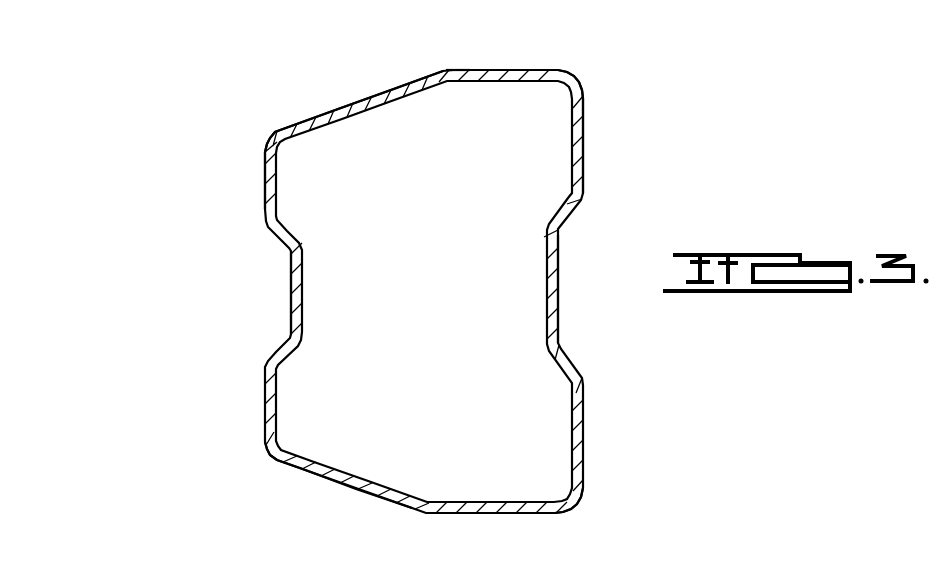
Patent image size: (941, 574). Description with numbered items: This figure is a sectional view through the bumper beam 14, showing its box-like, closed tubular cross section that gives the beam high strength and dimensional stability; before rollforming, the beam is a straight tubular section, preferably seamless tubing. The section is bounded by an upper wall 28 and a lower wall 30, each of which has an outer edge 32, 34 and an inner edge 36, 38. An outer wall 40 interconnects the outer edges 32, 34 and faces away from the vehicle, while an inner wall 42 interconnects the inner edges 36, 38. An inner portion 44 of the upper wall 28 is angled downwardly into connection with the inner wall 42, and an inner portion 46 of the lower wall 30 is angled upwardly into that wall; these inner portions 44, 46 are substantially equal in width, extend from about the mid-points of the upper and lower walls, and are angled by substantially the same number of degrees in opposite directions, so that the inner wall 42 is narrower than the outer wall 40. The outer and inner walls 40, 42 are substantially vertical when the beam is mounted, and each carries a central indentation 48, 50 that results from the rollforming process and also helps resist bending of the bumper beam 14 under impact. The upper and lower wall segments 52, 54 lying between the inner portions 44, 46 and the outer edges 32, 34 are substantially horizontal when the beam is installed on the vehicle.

The bumper beam 14 is at (516, 54).
The upper wall 28 is at (557, 63).
The lower wall 30 is at (509, 522).
The outer edge of upper wall 32 is at (572, 82).
The outer edge of lower wall 34 is at (562, 511).
The inner edge of upper wall 36 is at (279, 128).
The inner edge of lower wall 38 is at (270, 455).
The outer wall 40 is at (593, 156).
The inner wall 42 is at (258, 190).
The inner portion of upper wall 44 is at (366, 96).
The inner portion of lower wall 46 is at (345, 482).
The indentation 48 is at (292, 290).
The indentation 50 is at (557, 292).
The upper wall segment 52 is at (464, 70).
The lower wall segment 54 is at (467, 510).